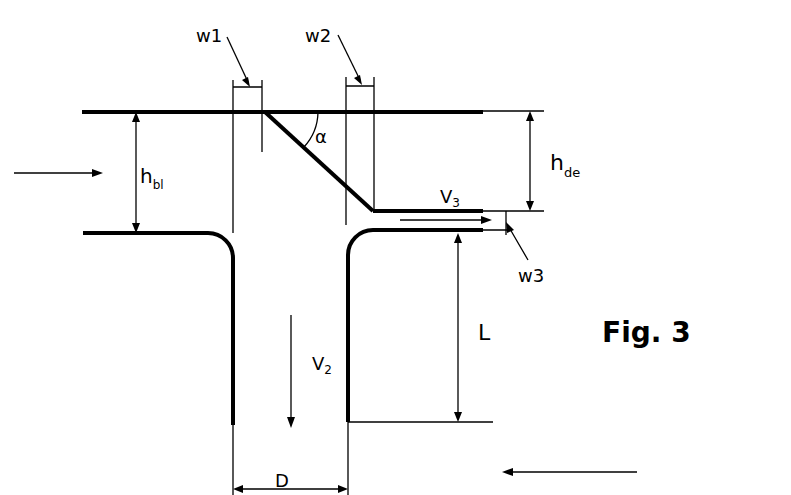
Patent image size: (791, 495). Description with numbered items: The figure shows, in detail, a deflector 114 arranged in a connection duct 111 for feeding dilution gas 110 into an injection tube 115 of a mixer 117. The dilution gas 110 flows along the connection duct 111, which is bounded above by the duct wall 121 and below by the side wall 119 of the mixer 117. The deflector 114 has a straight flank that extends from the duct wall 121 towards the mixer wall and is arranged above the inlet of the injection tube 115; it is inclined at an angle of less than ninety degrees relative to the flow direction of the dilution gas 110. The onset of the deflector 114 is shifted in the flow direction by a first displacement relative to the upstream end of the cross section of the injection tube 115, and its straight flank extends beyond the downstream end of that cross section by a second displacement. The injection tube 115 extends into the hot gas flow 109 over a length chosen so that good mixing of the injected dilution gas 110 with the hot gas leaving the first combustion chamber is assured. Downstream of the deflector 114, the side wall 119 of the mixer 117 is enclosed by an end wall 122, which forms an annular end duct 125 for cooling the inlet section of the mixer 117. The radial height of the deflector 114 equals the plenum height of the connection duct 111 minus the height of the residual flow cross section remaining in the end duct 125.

The hot gas flow 109 is at (569, 458).
The dilution gas 110 is at (58, 171).
The connection duct 111 is at (173, 153).
The deflector 114 is at (326, 165).
The injection tube 115 is at (263, 307).
The mixer 117 is at (195, 388).
The side wall 119 is at (162, 236).
The duct wall 121 is at (118, 112).
The end wall 122 is at (393, 207).
The annular end duct 125 is at (388, 220).